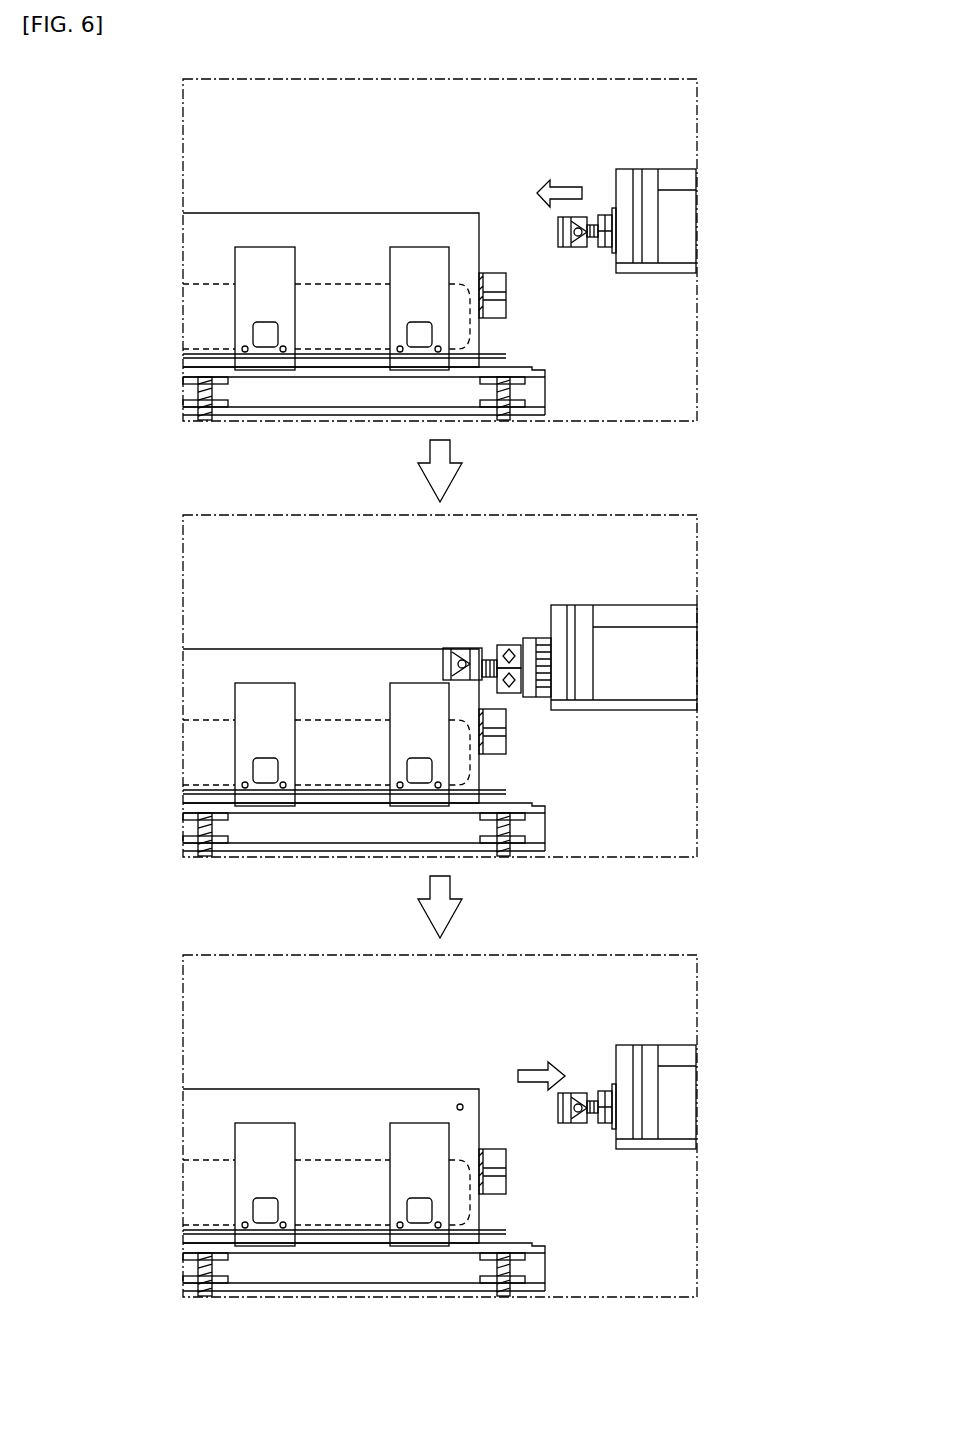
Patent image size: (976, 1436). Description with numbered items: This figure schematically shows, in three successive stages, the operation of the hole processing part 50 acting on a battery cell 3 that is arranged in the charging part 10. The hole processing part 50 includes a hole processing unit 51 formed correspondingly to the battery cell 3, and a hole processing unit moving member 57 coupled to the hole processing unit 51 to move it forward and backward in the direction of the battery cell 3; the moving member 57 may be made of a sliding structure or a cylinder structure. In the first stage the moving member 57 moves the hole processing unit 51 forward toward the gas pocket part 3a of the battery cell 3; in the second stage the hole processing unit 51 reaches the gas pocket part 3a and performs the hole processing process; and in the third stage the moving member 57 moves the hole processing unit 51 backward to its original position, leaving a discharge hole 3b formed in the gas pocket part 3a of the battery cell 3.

The battery cell 3 is at (228, 213).
The gas pocket part 3a is at (207, 240).
The discharge hole 3b is at (459, 1103).
The charging part 10 is at (560, 383).
The hole processing part 50 is at (664, 158).
The hole processing unit 51 is at (573, 247).
The hole processing unit moving member 57 is at (658, 179).